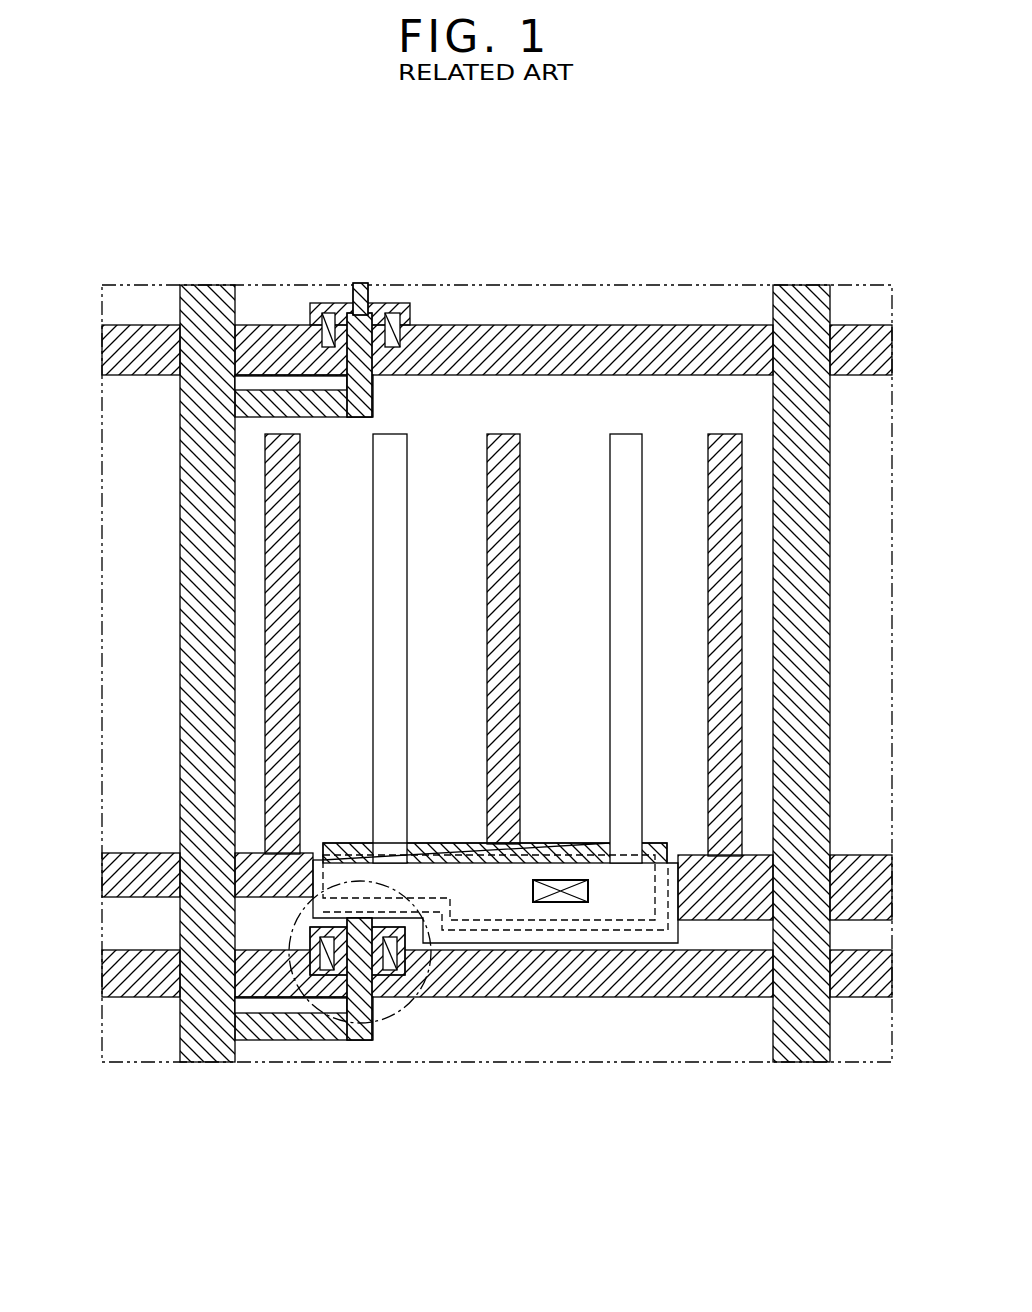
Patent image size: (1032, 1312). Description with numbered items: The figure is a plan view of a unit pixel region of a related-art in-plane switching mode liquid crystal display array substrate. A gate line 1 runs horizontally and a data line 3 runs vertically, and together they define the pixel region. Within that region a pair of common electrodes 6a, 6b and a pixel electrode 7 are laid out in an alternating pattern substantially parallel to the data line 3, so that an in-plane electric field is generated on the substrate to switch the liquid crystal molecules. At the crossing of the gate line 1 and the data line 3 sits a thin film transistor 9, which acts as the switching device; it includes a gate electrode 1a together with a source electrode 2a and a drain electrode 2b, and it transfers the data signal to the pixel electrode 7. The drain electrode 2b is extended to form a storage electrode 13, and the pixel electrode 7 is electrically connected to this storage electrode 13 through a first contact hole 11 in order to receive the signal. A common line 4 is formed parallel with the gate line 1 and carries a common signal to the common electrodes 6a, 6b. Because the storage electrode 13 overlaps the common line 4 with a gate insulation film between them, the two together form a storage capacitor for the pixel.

The gate line 1 is at (751, 1000).
The gate electrode 1a is at (430, 1000).
The source electrode 2a is at (380, 960).
The drain electrode 2b is at (347, 947).
The data line 3 is at (185, 467).
The common line 4 is at (706, 903).
The common electrode 6a is at (505, 443).
The common electrode 6b is at (280, 443).
The pixel electrode 7 is at (626, 443).
The thin film transistor 9 is at (425, 995).
The first contact hole 11 is at (563, 903).
The storage electrode 13 is at (657, 925).